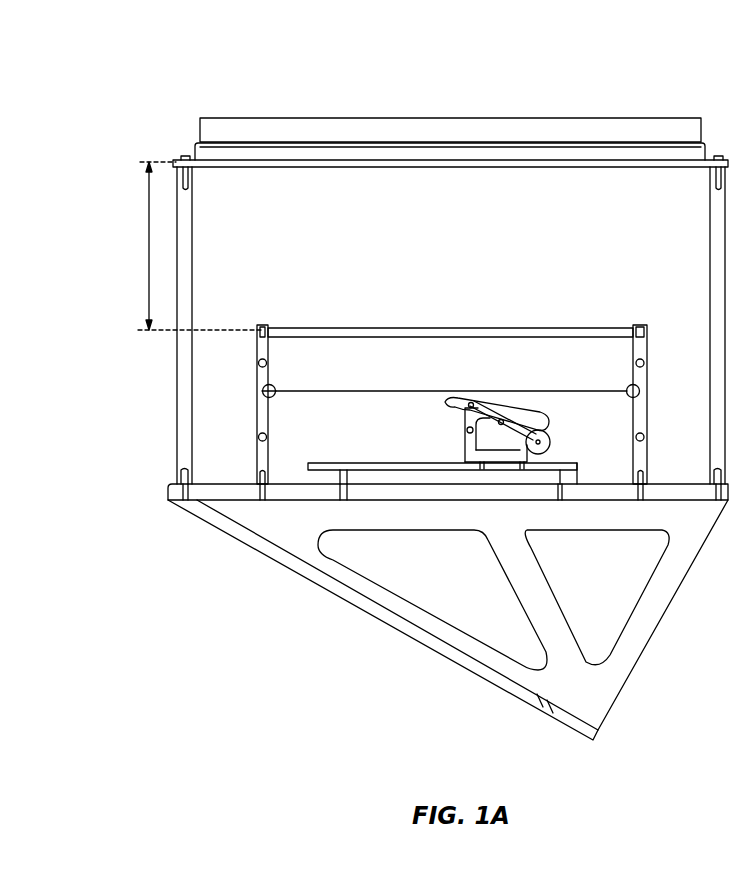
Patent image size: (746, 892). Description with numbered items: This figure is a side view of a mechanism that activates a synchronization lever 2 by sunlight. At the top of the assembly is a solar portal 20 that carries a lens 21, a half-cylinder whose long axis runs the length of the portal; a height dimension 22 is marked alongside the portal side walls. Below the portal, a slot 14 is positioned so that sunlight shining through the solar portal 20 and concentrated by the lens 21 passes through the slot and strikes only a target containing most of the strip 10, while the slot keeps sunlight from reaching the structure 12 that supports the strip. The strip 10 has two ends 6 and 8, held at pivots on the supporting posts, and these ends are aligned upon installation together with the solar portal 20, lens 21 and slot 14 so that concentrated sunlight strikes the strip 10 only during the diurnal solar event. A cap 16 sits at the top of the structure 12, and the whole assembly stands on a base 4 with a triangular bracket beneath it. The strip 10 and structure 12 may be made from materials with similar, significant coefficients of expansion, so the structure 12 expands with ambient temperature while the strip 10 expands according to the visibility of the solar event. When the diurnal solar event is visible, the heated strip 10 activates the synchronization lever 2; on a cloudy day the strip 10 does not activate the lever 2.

The solar portal 20 is at (190, 110).
The lens 21 is at (300, 118).
The housing height dimension 22 is at (149, 250).
The slot 14 is at (470, 328).
The post cap 16 is at (635, 325).
The strip end 6 is at (275, 388).
The strip 10 is at (495, 391).
The strip end 8 is at (628, 387).
The structure 12 is at (648, 418).
The synchronization lever 2 is at (558, 393).
The base plate 4 is at (262, 500).